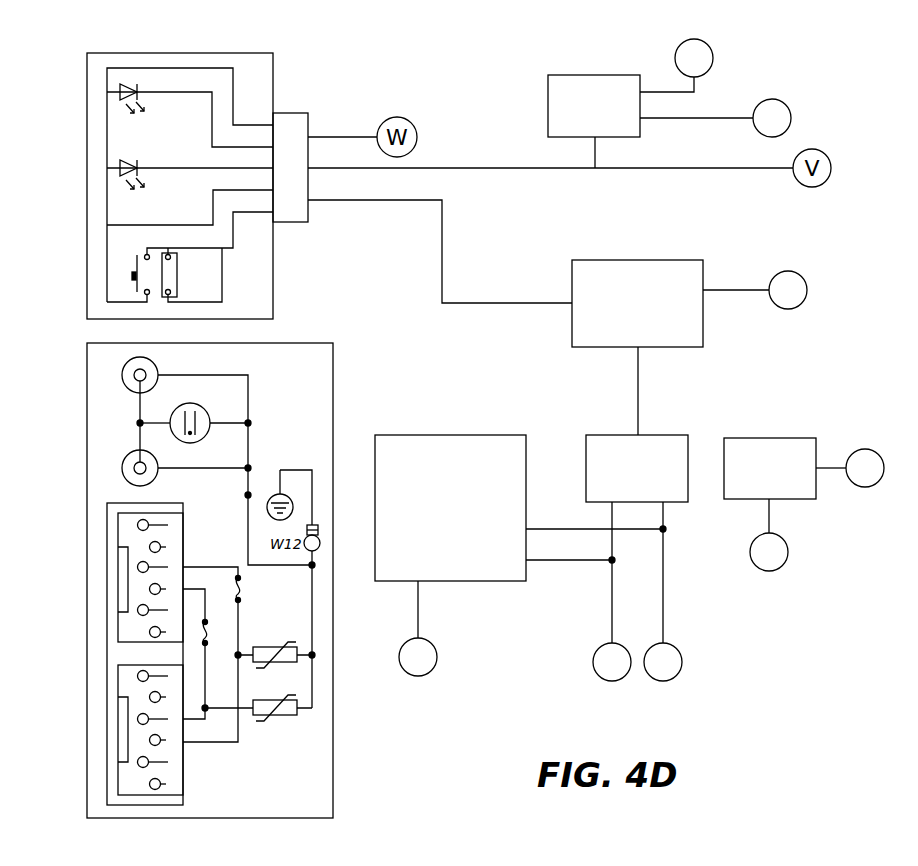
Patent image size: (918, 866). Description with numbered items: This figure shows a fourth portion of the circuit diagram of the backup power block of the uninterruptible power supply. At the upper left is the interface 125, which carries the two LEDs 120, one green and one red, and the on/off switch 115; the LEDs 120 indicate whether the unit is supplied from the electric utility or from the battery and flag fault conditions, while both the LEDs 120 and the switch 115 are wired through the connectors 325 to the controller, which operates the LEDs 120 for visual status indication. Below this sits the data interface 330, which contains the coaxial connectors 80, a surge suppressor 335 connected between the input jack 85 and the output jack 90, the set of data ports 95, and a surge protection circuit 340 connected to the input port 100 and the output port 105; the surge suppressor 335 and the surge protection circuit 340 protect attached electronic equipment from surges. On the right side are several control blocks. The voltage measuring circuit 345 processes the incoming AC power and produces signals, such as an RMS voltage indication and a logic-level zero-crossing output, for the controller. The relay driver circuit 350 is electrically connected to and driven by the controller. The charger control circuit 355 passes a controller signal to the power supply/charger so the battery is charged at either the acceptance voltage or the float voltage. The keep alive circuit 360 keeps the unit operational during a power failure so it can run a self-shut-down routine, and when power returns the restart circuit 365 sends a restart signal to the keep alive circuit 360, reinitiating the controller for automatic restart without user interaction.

The coaxial connectors 80 is at (106, 361).
The input jack 85 is at (122, 378).
The output jack 90 is at (122, 468).
The set of data ports 95 is at (338, 733).
The input port 100 is at (122, 780).
The output port 105 is at (122, 629).
The on/off switch 115 is at (130, 247).
The LEDs 120 is at (136, 60).
The interface 125 is at (250, 53).
The connectors 325 is at (297, 118).
The data interface 330 is at (335, 388).
The surge suppressor 335 is at (205, 405).
The surge protection circuit 340 is at (284, 726).
The voltage measuring circuit 345 is at (520, 555).
The relay driver circuit 350 is at (669, 103).
The charger control circuit 355 is at (804, 504).
The keep alive circuit 360 is at (689, 347).
The restart circuit 365 is at (637, 558).